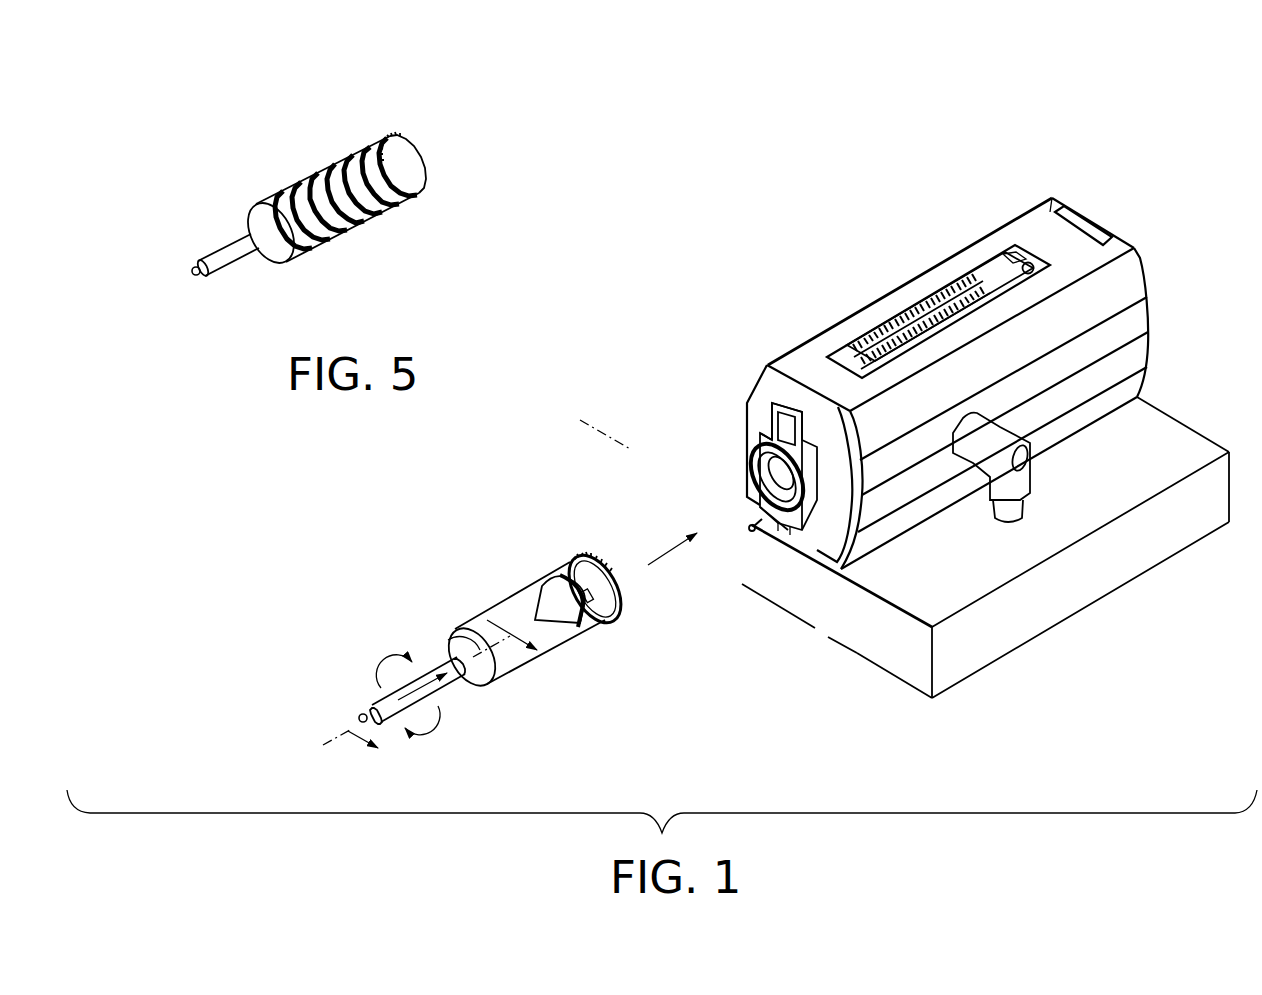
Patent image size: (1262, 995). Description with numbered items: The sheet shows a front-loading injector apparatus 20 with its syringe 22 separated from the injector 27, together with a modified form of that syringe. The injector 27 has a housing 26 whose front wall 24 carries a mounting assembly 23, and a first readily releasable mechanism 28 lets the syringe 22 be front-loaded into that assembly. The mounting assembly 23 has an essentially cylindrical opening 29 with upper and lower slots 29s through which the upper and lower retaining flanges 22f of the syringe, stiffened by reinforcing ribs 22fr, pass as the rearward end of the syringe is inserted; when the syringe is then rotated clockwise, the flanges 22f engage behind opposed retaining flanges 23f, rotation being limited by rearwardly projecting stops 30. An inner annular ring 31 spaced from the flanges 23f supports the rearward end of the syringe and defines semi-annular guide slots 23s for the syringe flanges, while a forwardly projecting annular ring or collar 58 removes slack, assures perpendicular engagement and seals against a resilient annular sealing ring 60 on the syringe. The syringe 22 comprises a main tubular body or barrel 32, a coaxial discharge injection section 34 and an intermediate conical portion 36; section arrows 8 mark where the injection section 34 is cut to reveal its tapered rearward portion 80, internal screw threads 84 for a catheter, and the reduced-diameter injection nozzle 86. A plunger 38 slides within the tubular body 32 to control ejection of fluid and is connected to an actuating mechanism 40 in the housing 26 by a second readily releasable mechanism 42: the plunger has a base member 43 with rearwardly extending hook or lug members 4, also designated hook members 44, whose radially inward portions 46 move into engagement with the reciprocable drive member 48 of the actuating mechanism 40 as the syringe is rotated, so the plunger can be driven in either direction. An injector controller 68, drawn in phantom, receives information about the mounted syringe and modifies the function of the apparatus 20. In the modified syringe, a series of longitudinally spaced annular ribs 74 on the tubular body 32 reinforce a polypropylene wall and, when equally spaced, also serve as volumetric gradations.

In FIG. 1, the hook or lug members 4 is at (545, 435).
In FIG. 1, the section line 8- 8 is at (430, 677).
In FIG. 1, the injector apparatus 20 is at (790, 250).
In FIG. 5, the syringe 22 is at (327, 152).
In FIG. 1, the syringe 22 is at (483, 597).
In FIG. 5, the retaining flanges 22f is at (383, 127).
In FIG. 1, the retaining flanges 22f is at (583, 548).
In FIG. 5, the reinforcing ribs 22fr is at (408, 142).
In FIG. 1, the reinforcing ribs 22fr is at (603, 548).
In FIG. 1, the mounting assembly 23 is at (742, 397).
In FIG. 1, the retaining flanges 23f is at (748, 480).
In FIG. 1, the semi-annular guide slots 23s is at (748, 468).
In FIG. 1, the front wall 24 is at (735, 388).
In FIG. 1, the housing 26 is at (837, 323).
In FIG. 1, the injector 27 is at (915, 273).
In FIG. 1, the first readily releasable mechanism 28 is at (632, 433).
In FIG. 1, the cylindrical opening 29 is at (773, 437).
In FIG. 1, the upper and lower slots 29s is at (750, 440).
In FIG. 1, the stops 30 is at (768, 420).
In FIG. 1, the inner annular ring 31 is at (790, 522).
In FIG. 5, the main tubular body or barrel 32 is at (310, 180).
In FIG. 1, the main tubular body or barrel 32 is at (527, 598).
In FIG. 5, the discharge injection section 34 is at (222, 237).
In FIG. 1, the discharge injection section 34 is at (424, 657).
In FIG. 5, the intermediate conical portion 36 is at (262, 222).
In FIG. 1, the intermediate conical portion 36 is at (457, 640).
In FIG. 1, the plunger 38 is at (583, 647).
In FIG. 1, the actuating mechanism 40 is at (832, 440).
In FIG. 1, the second readily releasable mechanism 42 is at (753, 527).
In FIG. 1, the base member 43 is at (553, 620).
In FIG. 1, the hook members 44 is at (597, 602).
In FIG. 1, the radially inward portions 46 is at (600, 600).
In FIG. 1, the reciprocable drive member 48 is at (778, 522).
In FIG. 1, the annular ring or collar 58 is at (807, 437).
In FIG. 1, the resilient annular sealing ring 60 is at (575, 568).
In FIG. 1, the injector controller 68 is at (1097, 568).
In FIG. 5, the annular ribs 74 is at (352, 145).
In FIG. 5, the rearward portion 80 is at (240, 258).
In FIG. 1, the rearward portion 80 is at (455, 685).
In FIG. 5, the internal screw threads 84 is at (208, 277).
In FIG. 1, the internal screw threads 84 is at (380, 722).
In FIG. 5, the injection nozzle 86 is at (196, 268).
In FIG. 1, the injection nozzle 86 is at (362, 715).